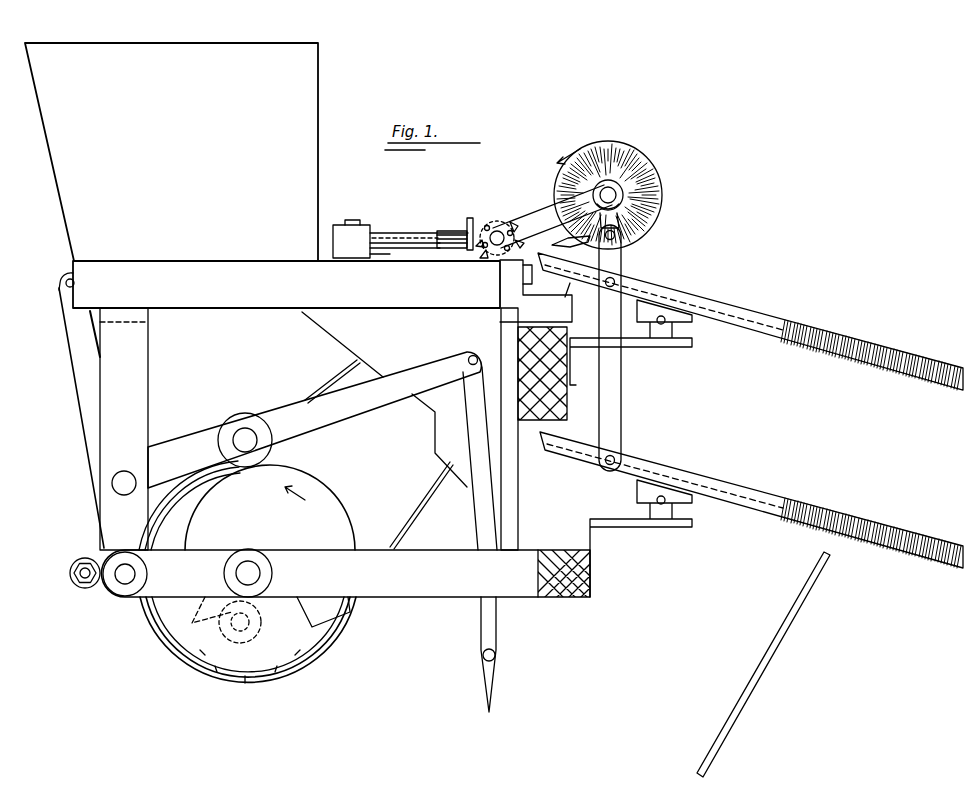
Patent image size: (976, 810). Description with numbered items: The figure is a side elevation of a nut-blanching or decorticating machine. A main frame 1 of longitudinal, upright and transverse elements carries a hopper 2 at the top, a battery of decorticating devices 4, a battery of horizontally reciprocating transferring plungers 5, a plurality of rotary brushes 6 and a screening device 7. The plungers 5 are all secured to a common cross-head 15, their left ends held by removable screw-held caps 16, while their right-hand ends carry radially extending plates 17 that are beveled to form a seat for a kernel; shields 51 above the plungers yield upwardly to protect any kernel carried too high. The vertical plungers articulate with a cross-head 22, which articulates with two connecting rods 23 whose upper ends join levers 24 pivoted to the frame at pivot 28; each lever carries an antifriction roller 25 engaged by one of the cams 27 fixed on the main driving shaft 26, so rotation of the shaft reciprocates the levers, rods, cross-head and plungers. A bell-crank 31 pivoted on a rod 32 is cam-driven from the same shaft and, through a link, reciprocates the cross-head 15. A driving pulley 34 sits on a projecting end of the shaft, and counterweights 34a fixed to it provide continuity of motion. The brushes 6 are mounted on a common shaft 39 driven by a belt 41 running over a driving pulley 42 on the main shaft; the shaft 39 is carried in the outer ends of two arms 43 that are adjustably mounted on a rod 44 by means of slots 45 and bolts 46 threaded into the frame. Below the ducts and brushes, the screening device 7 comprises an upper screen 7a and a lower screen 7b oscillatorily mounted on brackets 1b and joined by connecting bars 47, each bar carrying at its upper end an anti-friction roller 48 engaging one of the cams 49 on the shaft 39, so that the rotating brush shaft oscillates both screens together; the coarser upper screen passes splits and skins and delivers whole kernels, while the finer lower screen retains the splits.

The main frame 1 is at (329, 454).
The brackets 1b is at (645, 344).
The hopper 2 is at (171, 152).
The decorticating devices 4 is at (590, 258).
The transferring plungers 5 is at (418, 232).
The rotary brushes 6 is at (613, 148).
The screening device 7 is at (750, 410).
The upper screen 7a is at (750, 321).
The lower screen 7b is at (751, 500).
The cross-head 15 is at (376, 247).
The screw-held caps 16 is at (344, 226).
The radially extending plates 17 is at (451, 230).
The cross-head 22 is at (498, 660).
The connecting rods 23 is at (470, 440).
The levers 24 is at (314, 420).
The antifriction roller 25 is at (245, 413).
The main driving shaft 26 is at (260, 573).
The cams 27 is at (270, 507).
The pivot 28 is at (124, 471).
The bell-crank 31 is at (80, 420).
The rod 32 is at (122, 586).
The driving pulley 34 is at (322, 661).
The counterweights 34a is at (255, 650).
The shaft 39 is at (612, 192).
The belt 41 is at (415, 514).
The driving pulley 42 is at (335, 631).
The arms 43 is at (558, 214).
The rod 44 is at (498, 230).
The slots 45 is at (514, 224).
The bolts 46 is at (522, 242).
The connecting bars 47 is at (612, 400).
The anti-friction roller 48 is at (621, 235).
The cams 49 is at (624, 205).
The shields 51 is at (478, 217).